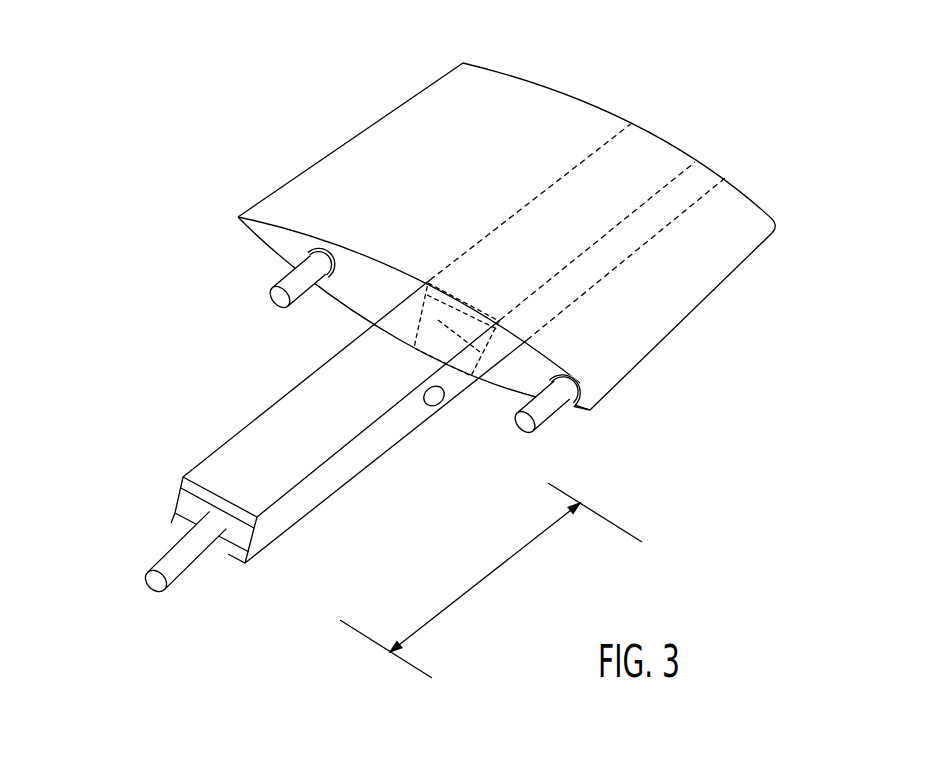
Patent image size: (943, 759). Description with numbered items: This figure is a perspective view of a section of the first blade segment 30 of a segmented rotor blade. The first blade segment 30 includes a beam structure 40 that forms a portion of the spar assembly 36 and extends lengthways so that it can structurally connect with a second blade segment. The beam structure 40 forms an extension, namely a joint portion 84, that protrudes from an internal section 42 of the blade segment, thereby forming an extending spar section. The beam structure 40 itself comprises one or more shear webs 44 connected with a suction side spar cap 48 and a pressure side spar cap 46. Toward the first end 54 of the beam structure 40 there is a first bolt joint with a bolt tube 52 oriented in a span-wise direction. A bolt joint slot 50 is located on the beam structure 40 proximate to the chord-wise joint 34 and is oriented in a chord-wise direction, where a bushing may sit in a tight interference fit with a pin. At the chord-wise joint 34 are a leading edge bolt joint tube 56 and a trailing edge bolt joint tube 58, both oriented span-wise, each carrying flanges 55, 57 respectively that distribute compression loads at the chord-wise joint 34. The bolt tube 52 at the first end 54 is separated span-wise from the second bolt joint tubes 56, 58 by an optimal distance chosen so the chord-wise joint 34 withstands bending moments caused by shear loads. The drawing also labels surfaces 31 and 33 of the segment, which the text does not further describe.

The first blade segment 30 is at (343, 160).
The front edge surface of panel 31 is at (357, 300).
The second end of panel 33 is at (740, 212).
The chord-wise joint 34 is at (263, 253).
The spar assembly 36 is at (362, 496).
The beam structure 40 is at (218, 457).
The internal section 42 is at (657, 150).
The shear web 44 is at (405, 442).
The pressure side spar cap 46 is at (177, 515).
The suction side spar cap 48 is at (183, 492).
The bolt joint slot 50 is at (437, 404).
The bolt tube 52 is at (182, 563).
The first end 54 is at (272, 554).
The flange 55 is at (583, 381).
The leading edge bolt joint tube 56 is at (526, 430).
The flange 57 is at (330, 247).
The trailing edge bolt joint tube 58 is at (281, 300).
The joint portion 84 is at (138, 344).